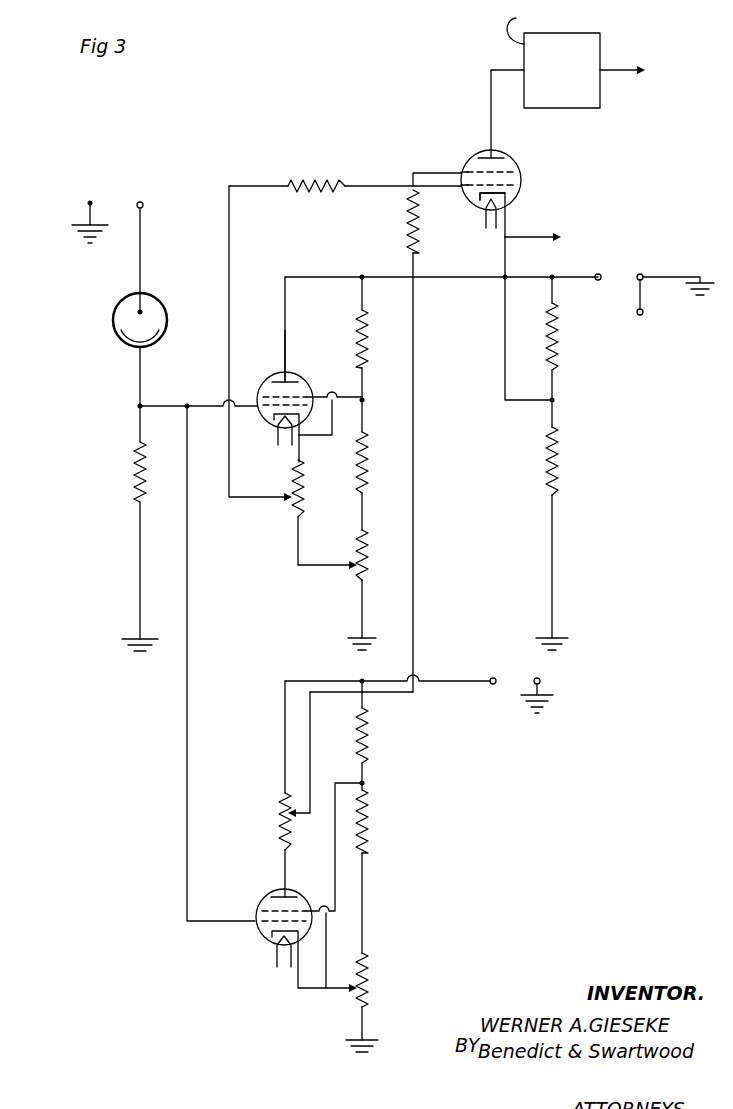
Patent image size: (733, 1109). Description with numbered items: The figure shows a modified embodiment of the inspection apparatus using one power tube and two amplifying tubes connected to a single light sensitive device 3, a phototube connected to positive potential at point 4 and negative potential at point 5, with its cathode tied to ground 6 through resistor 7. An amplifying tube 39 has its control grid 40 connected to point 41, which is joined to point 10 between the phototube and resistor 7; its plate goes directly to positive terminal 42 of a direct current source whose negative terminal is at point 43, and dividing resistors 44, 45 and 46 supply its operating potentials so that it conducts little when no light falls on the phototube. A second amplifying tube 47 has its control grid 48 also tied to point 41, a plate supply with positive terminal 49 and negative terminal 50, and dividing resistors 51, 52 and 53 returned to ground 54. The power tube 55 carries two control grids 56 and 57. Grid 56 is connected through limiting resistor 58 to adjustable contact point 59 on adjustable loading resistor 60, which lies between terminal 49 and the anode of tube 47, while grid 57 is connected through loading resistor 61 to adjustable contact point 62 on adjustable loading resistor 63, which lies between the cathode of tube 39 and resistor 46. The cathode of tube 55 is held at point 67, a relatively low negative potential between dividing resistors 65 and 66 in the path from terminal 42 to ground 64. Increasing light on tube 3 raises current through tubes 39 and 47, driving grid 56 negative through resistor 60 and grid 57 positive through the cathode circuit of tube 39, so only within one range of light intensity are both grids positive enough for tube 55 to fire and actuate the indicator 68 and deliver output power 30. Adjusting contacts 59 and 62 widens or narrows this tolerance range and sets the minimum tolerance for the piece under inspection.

The light sensitive device 3 is at (160, 300).
The point of positive potential 4 is at (148, 210).
The point of negative potential 5 is at (88, 206).
The ground 6 is at (136, 640).
The resistor 7 is at (135, 470).
The point between phototube and resistor 10 is at (137, 406).
The power output 30 is at (545, 236).
The amplifying tube 39 is at (305, 382).
The control grid 40 is at (266, 383).
The point 41 is at (204, 372).
The positive terminal 42 is at (601, 281).
The negative terminal 43 is at (648, 280).
The dividing resistor 44 is at (360, 346).
The dividing resistor 45 is at (366, 465).
The adjustable resistor 46 is at (364, 560).
The amplifying tube 47 is at (262, 938).
The control grid 48 is at (357, 638).
The positive terminal 49 is at (494, 686).
The negative terminal 50 is at (545, 688).
The dividing resistor 51 is at (366, 740).
The dividing resistor 52 is at (366, 830).
The dividing resistor 53 is at (368, 980).
The ground 54 is at (370, 1042).
The power tube 55 is at (514, 160).
The control grid 56 is at (465, 168).
The control grid 57 is at (463, 190).
The limiting resistor 58 is at (410, 232).
The adjustable contact point 59 is at (298, 815).
The adjustable loading resistor 60 is at (280, 826).
The loading resistor 61 is at (305, 184).
The adjustable contact point 62 is at (290, 500).
The adjustable loading resistor 63 is at (302, 497).
The ground 64 is at (548, 638).
The dividing resistor 65 is at (552, 332).
The dividing resistor 66 is at (554, 460).
The cathode connection point 67 is at (553, 400).
The indicator 68 is at (564, 57).